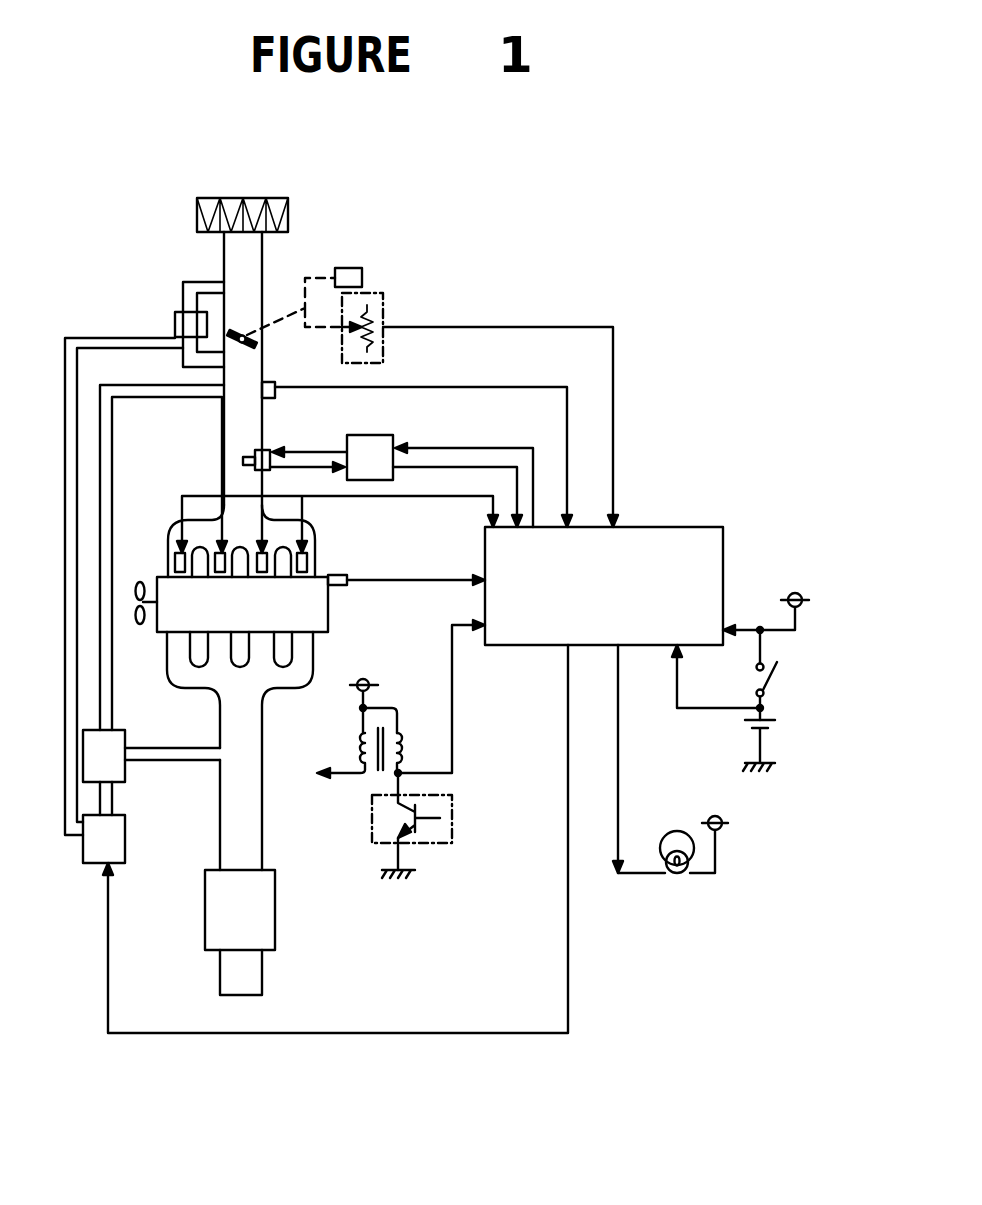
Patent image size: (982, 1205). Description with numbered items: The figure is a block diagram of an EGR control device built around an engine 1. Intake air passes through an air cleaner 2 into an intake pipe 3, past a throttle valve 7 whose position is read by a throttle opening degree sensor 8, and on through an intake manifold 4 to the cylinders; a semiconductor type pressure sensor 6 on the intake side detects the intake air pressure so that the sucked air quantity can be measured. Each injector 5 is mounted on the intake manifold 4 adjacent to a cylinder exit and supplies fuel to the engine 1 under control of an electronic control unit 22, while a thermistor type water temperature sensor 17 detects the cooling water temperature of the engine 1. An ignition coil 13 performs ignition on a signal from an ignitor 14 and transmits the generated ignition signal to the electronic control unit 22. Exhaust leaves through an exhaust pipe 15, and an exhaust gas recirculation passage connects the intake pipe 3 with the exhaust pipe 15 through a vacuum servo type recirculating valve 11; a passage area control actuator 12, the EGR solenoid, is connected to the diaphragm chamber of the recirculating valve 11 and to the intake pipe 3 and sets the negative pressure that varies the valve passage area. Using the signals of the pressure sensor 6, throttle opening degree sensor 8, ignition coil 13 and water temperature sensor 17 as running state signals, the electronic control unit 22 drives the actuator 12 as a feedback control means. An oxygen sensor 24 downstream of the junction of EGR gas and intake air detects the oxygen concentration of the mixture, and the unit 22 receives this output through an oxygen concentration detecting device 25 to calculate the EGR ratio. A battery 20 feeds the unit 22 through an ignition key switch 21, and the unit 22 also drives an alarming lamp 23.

The engine 1 is at (328, 620).
The air cleaner 2 is at (197, 215).
The intake pipe 3 is at (224, 263).
The intake manifold 4 is at (315, 541).
The injector 5 is at (175, 560).
The pressure sensor 6 is at (275, 384).
The throttle valve 7 is at (246, 343).
The throttle opening degree sensor 8 is at (383, 290).
The exhaust gas recirculating valve 11 is at (117, 735).
The passage area control actuator 12 is at (125, 822).
The ignition coil 13 is at (358, 748).
The ignitor 14 is at (452, 803).
The exhaust pipe 15 is at (262, 812).
The water temperature sensor 17 is at (347, 577).
The battery 20 is at (748, 726).
The ignition key switch 21 is at (755, 685).
The electronic control unit 22 is at (668, 527).
The alarming lamp 23 is at (677, 876).
The oxygen sensor 24 is at (265, 450).
The oxygen concentration detecting device 25 is at (357, 435).